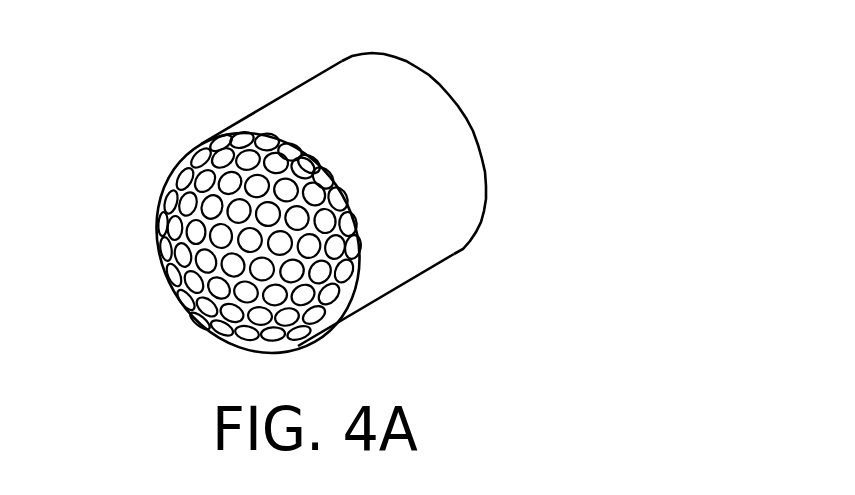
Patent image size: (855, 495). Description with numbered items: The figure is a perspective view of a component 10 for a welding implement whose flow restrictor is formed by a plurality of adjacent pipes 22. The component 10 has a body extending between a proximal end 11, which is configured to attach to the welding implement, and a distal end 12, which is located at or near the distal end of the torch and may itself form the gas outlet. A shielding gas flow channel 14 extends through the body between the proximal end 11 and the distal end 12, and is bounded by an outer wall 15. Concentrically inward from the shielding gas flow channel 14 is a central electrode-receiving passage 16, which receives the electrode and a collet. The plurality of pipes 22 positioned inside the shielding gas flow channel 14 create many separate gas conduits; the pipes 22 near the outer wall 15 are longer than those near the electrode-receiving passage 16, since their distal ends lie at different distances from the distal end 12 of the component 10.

The component 10 is at (289, 203).
The proximal end 11 is at (410, 62).
The distal end 12 is at (157, 215).
The shielding gas flow channel 14 is at (318, 286).
The outer wall 15 is at (287, 105).
The electrode-receiving passage 16 is at (297, 218).
The pipes 22 is at (222, 268).